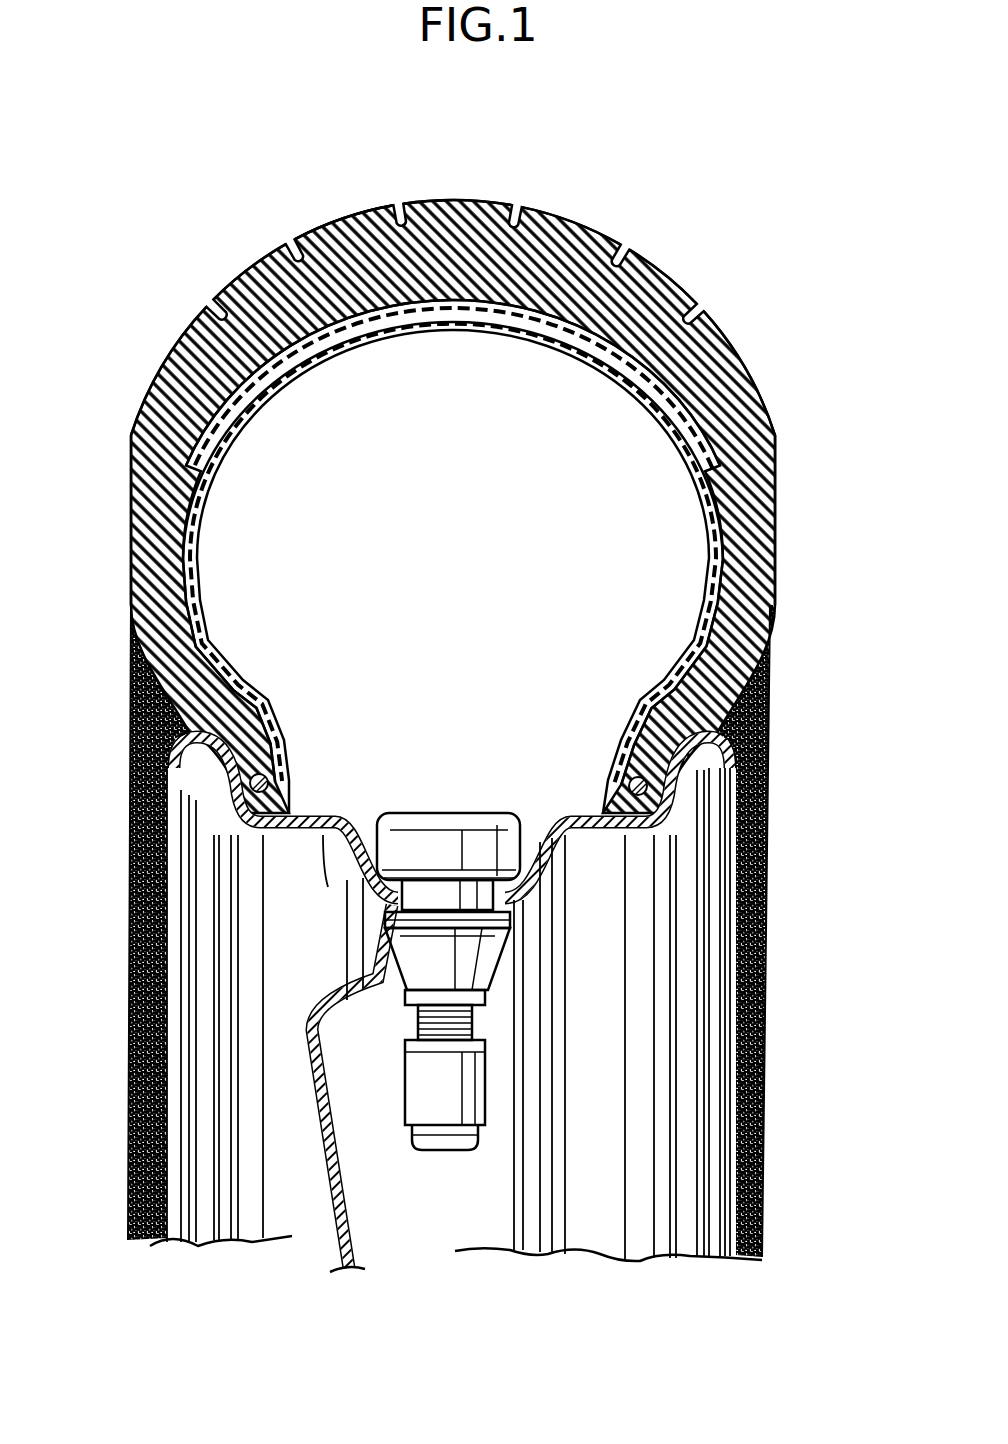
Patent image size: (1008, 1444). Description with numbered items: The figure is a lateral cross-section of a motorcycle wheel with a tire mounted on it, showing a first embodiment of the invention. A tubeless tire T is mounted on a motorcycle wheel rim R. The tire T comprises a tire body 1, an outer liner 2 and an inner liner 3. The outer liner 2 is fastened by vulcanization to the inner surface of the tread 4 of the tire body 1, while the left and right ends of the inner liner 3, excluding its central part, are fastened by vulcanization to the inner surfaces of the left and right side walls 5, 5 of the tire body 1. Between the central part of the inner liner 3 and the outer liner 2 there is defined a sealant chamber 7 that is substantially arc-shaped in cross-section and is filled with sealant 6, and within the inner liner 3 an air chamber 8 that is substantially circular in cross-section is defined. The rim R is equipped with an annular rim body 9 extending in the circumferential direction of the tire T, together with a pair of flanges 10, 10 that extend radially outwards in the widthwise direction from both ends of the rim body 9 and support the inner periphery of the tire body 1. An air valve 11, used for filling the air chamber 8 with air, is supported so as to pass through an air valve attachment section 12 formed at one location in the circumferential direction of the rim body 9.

The tire body 1 is at (579, 213).
The outer liner 2 is at (546, 313).
The inner liner 3 is at (377, 331).
The tread 4 is at (323, 241).
The side wall 5 is at (159, 606).
The sealant 6 is at (270, 386).
The sealant chamber 7 is at (631, 393).
The air chamber 8 is at (438, 585).
The rim body 9 is at (285, 836).
The flange 10 is at (130, 713).
The air valve 11 is at (397, 990).
The air valve attachment section 12 is at (541, 861).
The rim R is at (728, 1062).
The tubeless tire T is at (756, 316).